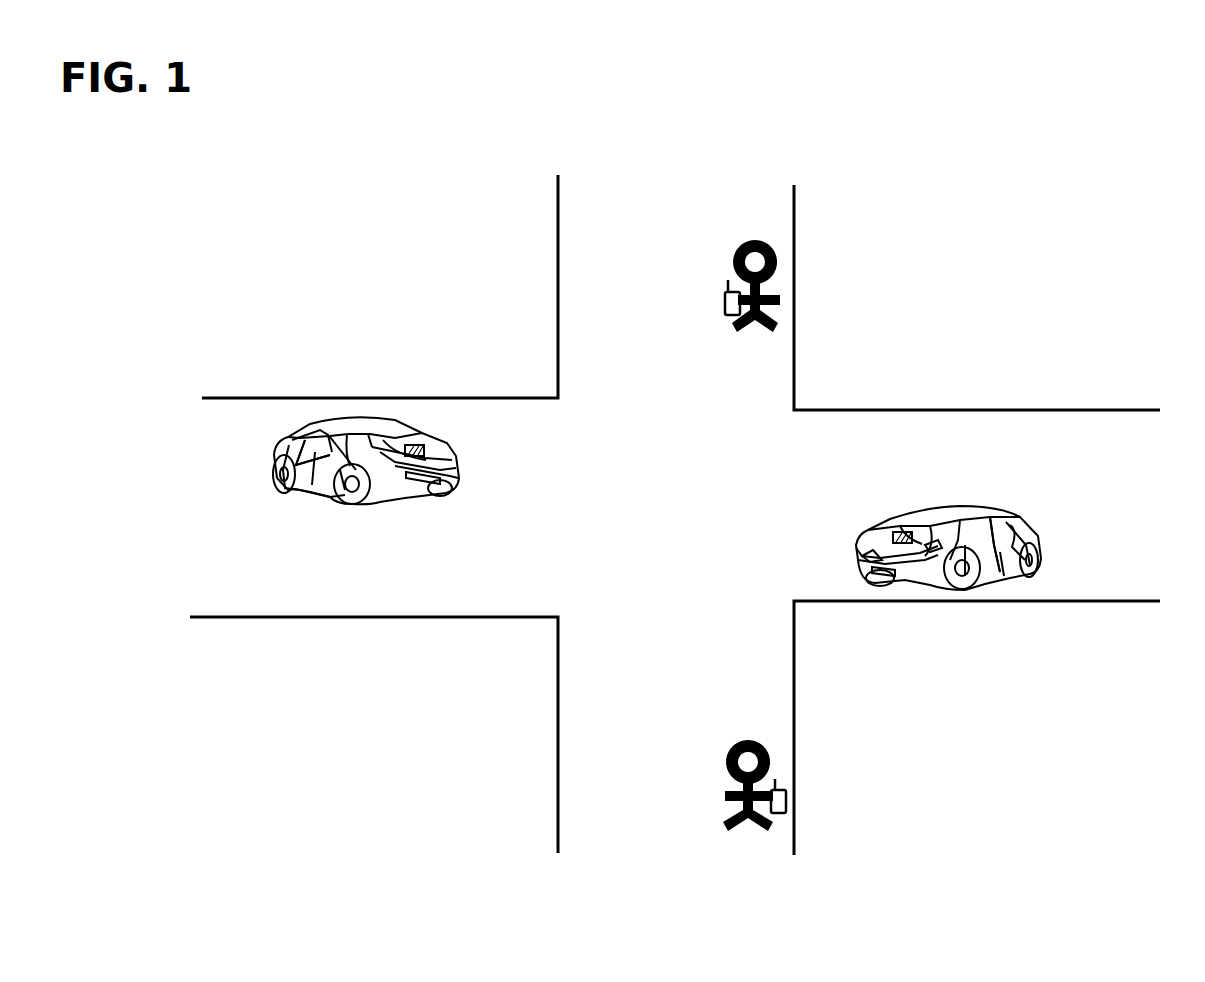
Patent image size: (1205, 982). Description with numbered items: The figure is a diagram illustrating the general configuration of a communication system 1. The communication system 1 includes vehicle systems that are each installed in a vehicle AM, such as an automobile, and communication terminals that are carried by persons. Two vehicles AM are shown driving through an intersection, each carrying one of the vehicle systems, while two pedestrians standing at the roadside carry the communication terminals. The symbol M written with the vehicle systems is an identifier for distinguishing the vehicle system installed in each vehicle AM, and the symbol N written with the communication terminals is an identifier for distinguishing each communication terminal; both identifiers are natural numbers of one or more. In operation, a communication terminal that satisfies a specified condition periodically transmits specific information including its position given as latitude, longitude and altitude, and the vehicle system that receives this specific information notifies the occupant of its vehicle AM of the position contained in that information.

The communication system 1 is at (522, 172).
The vehicle AM is at (320, 428).